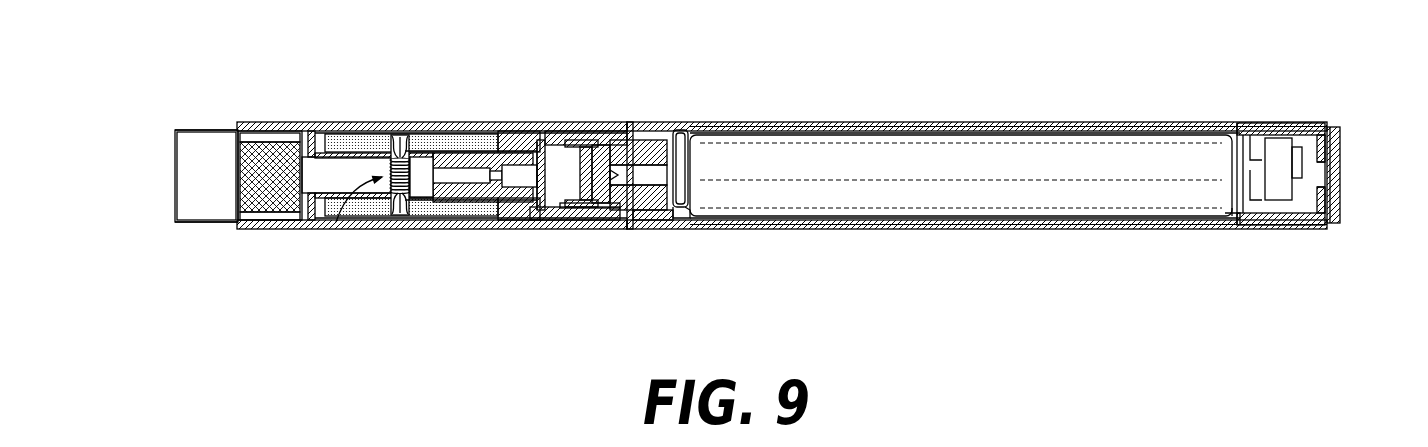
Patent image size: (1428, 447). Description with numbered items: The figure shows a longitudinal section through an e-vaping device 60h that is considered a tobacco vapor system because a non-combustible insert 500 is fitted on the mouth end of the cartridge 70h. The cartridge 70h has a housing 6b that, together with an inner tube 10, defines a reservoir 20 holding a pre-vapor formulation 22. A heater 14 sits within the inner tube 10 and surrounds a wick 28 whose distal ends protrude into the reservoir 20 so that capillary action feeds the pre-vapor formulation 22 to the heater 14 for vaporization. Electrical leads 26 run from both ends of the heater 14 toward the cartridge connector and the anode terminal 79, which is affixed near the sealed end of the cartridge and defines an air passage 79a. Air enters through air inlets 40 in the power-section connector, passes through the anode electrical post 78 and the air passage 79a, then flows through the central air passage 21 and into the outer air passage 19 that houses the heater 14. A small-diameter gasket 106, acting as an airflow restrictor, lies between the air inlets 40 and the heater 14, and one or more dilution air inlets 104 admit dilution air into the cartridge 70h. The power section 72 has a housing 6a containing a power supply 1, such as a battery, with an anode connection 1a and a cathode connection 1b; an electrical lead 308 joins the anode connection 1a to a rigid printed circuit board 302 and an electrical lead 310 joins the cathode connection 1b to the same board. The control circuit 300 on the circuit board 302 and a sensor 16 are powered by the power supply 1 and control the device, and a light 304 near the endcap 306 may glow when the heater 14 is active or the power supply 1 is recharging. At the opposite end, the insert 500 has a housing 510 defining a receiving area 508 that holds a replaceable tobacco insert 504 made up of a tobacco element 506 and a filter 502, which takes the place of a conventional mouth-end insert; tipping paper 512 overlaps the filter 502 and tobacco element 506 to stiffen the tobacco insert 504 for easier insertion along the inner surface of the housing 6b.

The power supply 1 is at (927, 160).
The anode connection 1a is at (673, 227).
The cathode connection 1b is at (1220, 227).
The housing 6a is at (1028, 122).
The housing 6b is at (292, 122).
The inner tube 10 is at (306, 213).
The heater 14 is at (336, 222).
The sensor 16 is at (1277, 150).
The outer air passage 19 is at (375, 205).
The reservoir 20 is at (357, 134).
The central air passage 21 is at (452, 175).
The pre-vapor formulation 22 is at (370, 143).
The electrical leads 26 is at (460, 122).
The wick 28 is at (393, 143).
The air inlets 40 is at (623, 227).
The e-vaping device 60h is at (668, 65).
The cartridge 70h is at (412, 110).
The power section 72 is at (867, 117).
The anode electrical post 78 is at (607, 140).
The anode terminal 79 is at (580, 140).
The air passage 79a is at (540, 215).
The dilution air inlets 104 is at (313, 122).
The gasket 106 is at (523, 131).
The control circuit 300 is at (1250, 132).
The rigid printed circuit board 302 is at (1297, 160).
The light 304 is at (1323, 175).
The endcap 306 is at (1340, 132).
The electrical lead 308 is at (685, 122).
The electrical lead 310 is at (733, 228).
The insert 500 is at (172, 112).
The filter 502 is at (190, 170).
The replaceable tobacco insert 504 is at (188, 223).
The tobacco element 506 is at (258, 212).
The receiving area 508 is at (233, 157).
The housing 510 is at (275, 213).
The tipping paper 512 is at (203, 130).